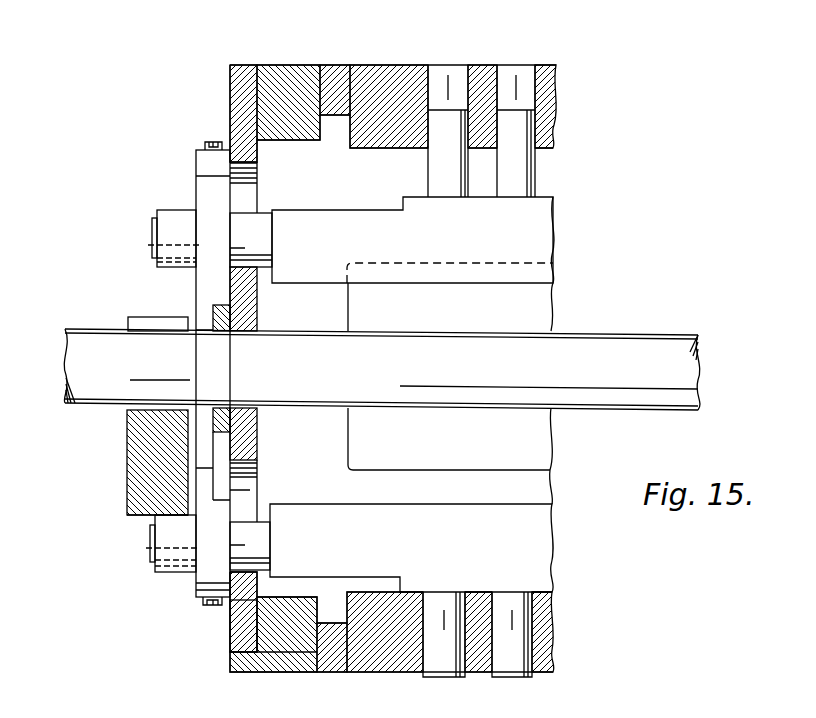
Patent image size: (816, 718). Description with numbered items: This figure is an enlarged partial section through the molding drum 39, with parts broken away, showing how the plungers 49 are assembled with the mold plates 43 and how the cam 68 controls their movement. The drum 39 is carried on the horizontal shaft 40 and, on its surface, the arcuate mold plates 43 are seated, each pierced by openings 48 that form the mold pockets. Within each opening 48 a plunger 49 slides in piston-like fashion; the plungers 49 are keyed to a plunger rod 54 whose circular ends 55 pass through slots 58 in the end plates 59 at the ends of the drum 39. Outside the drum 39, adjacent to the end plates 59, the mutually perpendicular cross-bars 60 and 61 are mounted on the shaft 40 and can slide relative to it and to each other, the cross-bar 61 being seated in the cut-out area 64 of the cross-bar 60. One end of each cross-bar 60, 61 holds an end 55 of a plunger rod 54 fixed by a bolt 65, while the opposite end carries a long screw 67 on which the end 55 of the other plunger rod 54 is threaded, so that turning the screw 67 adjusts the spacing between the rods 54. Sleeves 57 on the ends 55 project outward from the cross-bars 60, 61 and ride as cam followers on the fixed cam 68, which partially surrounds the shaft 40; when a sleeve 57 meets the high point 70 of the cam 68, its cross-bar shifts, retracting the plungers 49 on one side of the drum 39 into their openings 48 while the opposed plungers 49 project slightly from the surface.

The molding drum 39 is at (286, 67).
The shaft 40 is at (628, 352).
The mold plate 43 is at (380, 68).
The opening 48 is at (448, 74).
The plunger 49 is at (437, 168).
The plunger rod 54 is at (344, 212).
The end of plunger rod 55 is at (263, 220).
The sleeve 57 is at (158, 258).
The slot 58 is at (250, 488).
The end plate 59 is at (236, 634).
The cross-bar 60 is at (212, 190).
The cross-bar 61 is at (212, 318).
The cut-out area 64 is at (218, 450).
The bolt 65 is at (204, 602).
The screw 67 is at (208, 142).
The cam 68 is at (134, 447).
The high point 70 is at (135, 525).